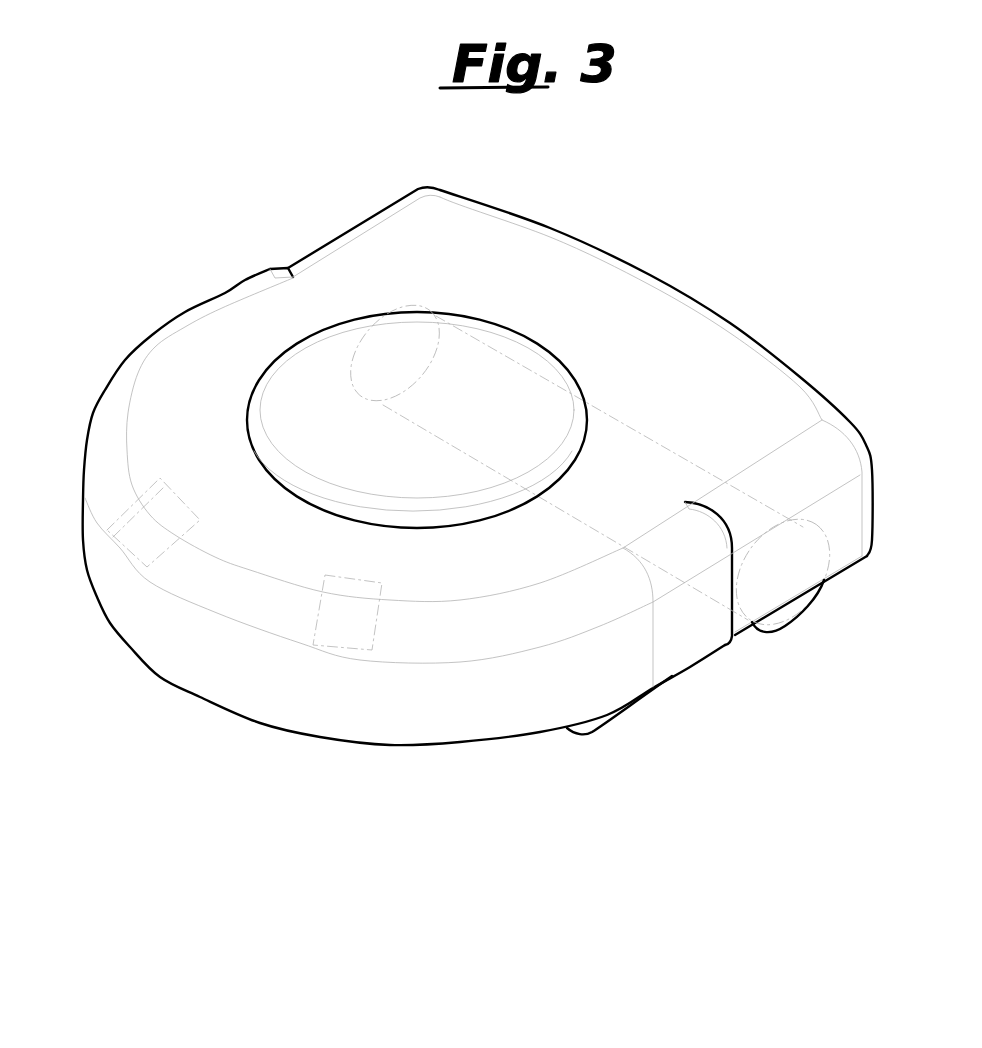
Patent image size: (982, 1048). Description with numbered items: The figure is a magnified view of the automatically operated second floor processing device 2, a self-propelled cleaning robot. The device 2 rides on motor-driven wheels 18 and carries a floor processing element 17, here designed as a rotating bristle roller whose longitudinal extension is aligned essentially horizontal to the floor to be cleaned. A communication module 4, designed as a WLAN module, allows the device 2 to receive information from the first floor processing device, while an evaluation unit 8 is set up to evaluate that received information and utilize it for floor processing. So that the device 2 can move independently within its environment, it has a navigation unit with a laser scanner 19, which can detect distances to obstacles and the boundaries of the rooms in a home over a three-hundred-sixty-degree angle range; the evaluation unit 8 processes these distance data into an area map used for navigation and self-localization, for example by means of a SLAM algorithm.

The second floor processing device 2 is at (282, 126).
The communication module 4 is at (353, 622).
The evaluation unit 8 is at (140, 540).
The floor processing element 17 is at (617, 432).
The wheels 18 is at (608, 720).
The laser scanner 19 is at (327, 433).